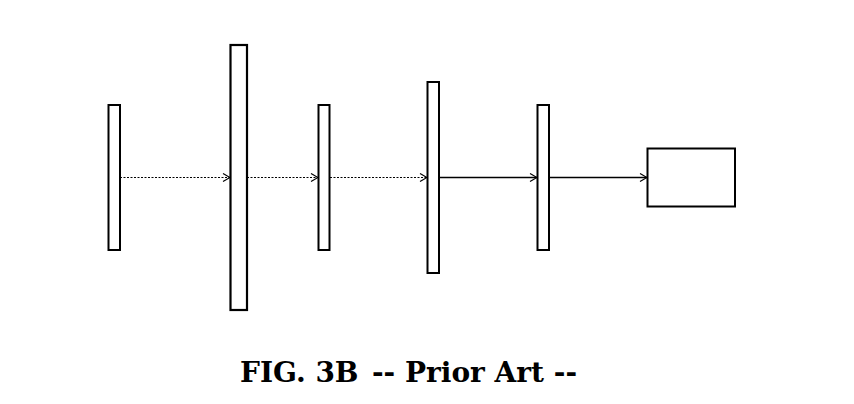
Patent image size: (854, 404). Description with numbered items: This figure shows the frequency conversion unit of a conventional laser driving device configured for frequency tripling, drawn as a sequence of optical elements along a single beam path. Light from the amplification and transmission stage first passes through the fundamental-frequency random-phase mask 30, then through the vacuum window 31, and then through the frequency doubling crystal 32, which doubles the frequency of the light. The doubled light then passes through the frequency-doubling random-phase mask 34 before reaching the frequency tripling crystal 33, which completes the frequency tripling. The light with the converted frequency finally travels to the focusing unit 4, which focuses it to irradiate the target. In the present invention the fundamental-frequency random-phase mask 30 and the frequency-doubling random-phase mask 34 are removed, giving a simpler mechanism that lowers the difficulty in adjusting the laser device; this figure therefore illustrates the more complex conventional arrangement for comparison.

The fundamental-frequency random-phase mask 30 is at (115, 194).
The vacuum window 31 is at (237, 193).
The frequency doubling crystal 32 is at (322, 194).
The frequency tripling crystal 33 is at (543, 194).
The frequency-doubling random-phase mask 34 is at (433, 194).
The focusing unit 4 is at (692, 178).